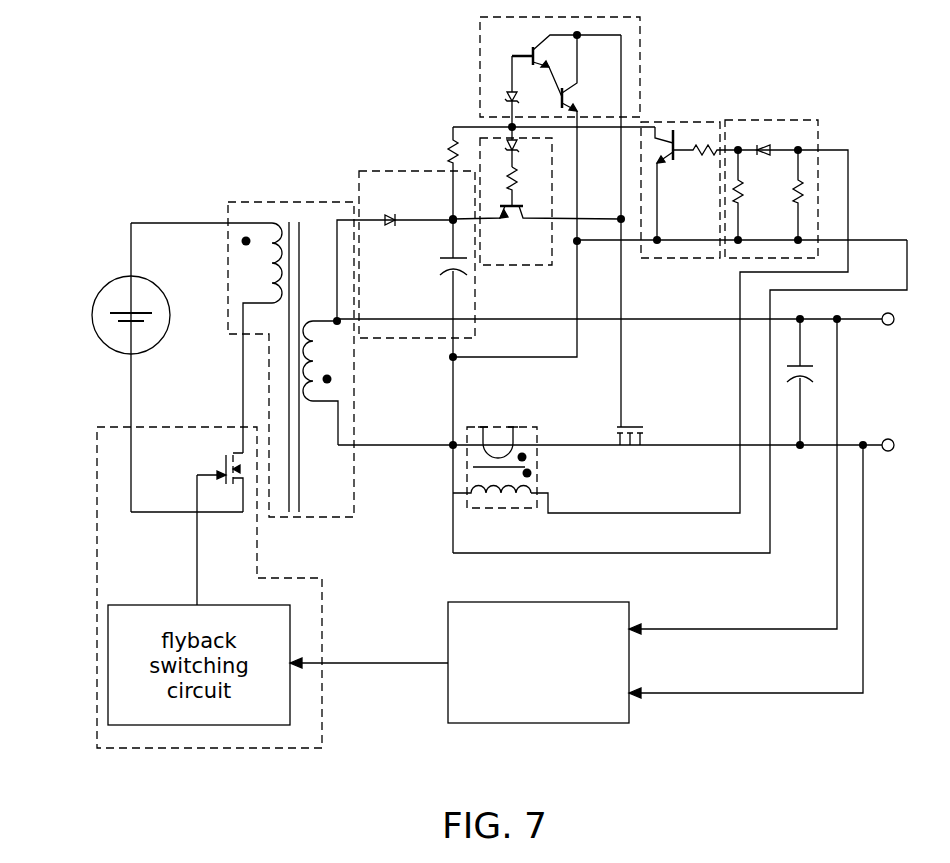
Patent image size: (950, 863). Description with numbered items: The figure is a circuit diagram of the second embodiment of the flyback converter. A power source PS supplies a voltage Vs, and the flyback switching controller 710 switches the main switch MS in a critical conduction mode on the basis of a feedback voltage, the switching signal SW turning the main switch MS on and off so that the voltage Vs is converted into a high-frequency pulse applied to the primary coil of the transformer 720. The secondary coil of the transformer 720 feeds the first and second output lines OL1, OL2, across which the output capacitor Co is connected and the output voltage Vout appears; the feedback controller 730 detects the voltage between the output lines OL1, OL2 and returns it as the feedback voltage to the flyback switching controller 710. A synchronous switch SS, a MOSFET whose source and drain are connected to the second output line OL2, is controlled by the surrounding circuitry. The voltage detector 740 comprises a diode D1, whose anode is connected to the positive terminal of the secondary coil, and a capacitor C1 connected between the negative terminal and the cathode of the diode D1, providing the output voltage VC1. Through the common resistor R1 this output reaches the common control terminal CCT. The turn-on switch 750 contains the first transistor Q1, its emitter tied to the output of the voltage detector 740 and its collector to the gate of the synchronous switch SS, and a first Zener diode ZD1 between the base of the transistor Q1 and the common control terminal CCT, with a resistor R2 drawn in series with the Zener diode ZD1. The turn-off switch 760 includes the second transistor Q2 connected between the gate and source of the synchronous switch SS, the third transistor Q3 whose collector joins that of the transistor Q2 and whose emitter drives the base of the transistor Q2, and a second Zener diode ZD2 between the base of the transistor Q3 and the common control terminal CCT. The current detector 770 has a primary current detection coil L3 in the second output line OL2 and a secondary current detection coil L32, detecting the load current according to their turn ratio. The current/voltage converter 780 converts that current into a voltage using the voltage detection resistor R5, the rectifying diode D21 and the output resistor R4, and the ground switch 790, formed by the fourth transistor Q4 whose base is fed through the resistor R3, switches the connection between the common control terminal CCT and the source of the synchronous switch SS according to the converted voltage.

The flyback switching controller 710 is at (97, 583).
The transformer 720 is at (278, 201).
The feedback controller 730 is at (508, 601).
The voltage detector 740 is at (390, 170).
The turn-on switch 750 is at (517, 267).
The turn-off switch 760 is at (640, 53).
The current detector 770 is at (494, 425).
The current/voltage converter 780 is at (765, 119).
The ground switch 790 is at (678, 119).
The power source PS is at (103, 342).
The voltage Vs is at (201, 211).
The main switch MS is at (211, 523).
The switching signal SW is at (171, 590).
The diode D1 is at (395, 257).
The output voltage of voltage detector VC1 is at (450, 221).
The capacitor C1 is at (437, 386).
The common resistor R1 is at (438, 173).
The common control terminal CCT is at (508, 126).
The second Zener diode ZD2 is at (531, 91).
The third transistor Q3 is at (565, 60).
The second transistor Q2 is at (585, 73).
The first Zener diode ZD1 is at (532, 147).
The resistor R2 is at (526, 186).
The first transistor Q1 is at (537, 226).
The fourth transistor Q4 is at (672, 180).
The resistor R3 is at (705, 163).
The diode D21 is at (774, 139).
The output resistor R4 is at (752, 195).
The voltage detection resistor R5 is at (784, 195).
The first output line OL1 is at (777, 318).
The second output line OL2 is at (791, 450).
The output capacitor Co is at (809, 382).
The output voltage Vout is at (907, 383).
The primary current detection coil L3 is at (500, 447).
The secondary current detection coil L32 is at (492, 490).
The synchronous switch SS is at (630, 451).